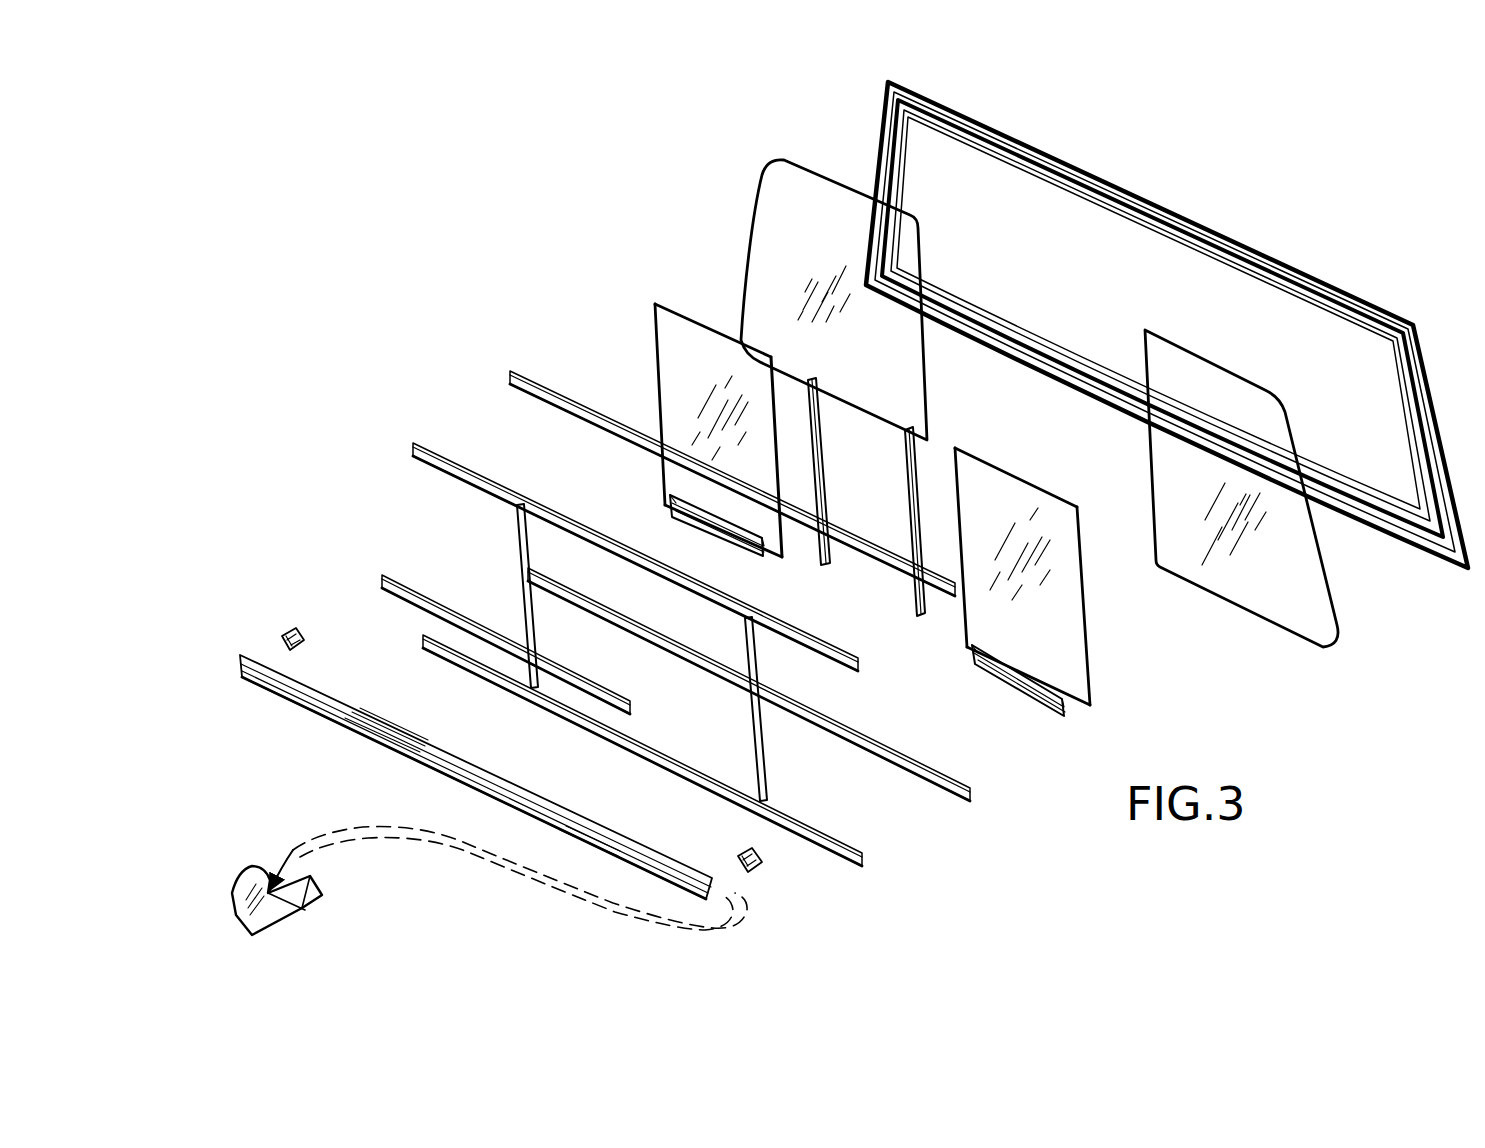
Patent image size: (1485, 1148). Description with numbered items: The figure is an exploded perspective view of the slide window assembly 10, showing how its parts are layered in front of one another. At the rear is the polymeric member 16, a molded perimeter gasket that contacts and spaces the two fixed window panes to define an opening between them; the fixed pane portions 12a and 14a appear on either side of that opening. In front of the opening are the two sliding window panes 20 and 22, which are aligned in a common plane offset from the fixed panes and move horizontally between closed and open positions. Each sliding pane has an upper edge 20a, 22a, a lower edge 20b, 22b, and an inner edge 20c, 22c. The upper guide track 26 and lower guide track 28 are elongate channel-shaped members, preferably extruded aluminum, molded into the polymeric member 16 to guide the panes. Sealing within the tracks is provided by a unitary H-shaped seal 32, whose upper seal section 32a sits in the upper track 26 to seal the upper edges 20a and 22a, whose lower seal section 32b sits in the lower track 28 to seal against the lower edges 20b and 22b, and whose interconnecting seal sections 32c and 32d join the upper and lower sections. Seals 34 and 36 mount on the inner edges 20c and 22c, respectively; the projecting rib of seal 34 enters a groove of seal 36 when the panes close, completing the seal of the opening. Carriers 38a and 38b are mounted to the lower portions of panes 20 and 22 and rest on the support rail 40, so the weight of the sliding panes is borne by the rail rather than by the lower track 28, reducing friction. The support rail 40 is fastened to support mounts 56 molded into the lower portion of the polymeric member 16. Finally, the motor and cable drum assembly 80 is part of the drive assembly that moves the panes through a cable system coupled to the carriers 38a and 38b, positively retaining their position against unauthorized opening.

The window assembly 10 is at (1205, 186).
The polymeric member 16 is at (1300, 268).
The fixed glass panel 12a is at (919, 247).
The fixed glass panel 14a is at (1138, 330).
The sliding window pane 20 is at (663, 340).
The upper edge of sliding pane 20 20a is at (688, 303).
The lower edge of sliding pane 20 20b is at (660, 505).
The inner edge of sliding panel 20 20c is at (780, 413).
The sliding window pane 22 is at (1063, 575).
The upper edge of sliding pane 22 22a is at (1005, 470).
The lower edge of sliding pane 22 22b is at (1082, 708).
The inner edge of sliding panel 22 22c is at (956, 470).
The upper guide track 26 is at (540, 385).
The lower guide track 28 is at (980, 790).
The H-shaped seal 32 is at (426, 436).
The upper seal section 32a is at (418, 460).
The lower seal section 32b is at (425, 647).
The interconnecting seal section 32c is at (520, 557).
The interconnecting seal section 32d is at (770, 760).
The seal 34 is at (823, 448).
The seal 36 is at (905, 510).
The carrier 38a is at (745, 562).
The carrier 38b is at (1000, 690).
The support rail 40 is at (580, 830).
The support mount 56 is at (276, 630).
The motor and cable drum assembly 80 is at (240, 862).